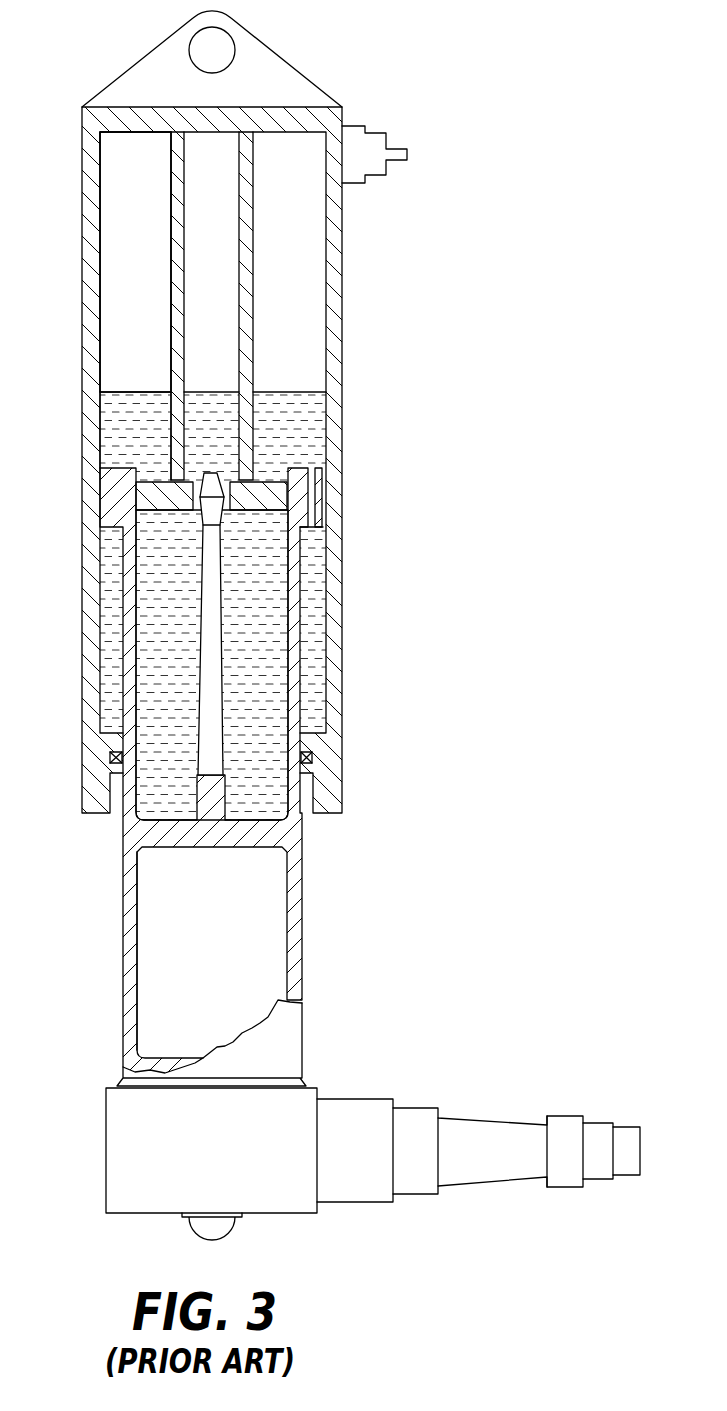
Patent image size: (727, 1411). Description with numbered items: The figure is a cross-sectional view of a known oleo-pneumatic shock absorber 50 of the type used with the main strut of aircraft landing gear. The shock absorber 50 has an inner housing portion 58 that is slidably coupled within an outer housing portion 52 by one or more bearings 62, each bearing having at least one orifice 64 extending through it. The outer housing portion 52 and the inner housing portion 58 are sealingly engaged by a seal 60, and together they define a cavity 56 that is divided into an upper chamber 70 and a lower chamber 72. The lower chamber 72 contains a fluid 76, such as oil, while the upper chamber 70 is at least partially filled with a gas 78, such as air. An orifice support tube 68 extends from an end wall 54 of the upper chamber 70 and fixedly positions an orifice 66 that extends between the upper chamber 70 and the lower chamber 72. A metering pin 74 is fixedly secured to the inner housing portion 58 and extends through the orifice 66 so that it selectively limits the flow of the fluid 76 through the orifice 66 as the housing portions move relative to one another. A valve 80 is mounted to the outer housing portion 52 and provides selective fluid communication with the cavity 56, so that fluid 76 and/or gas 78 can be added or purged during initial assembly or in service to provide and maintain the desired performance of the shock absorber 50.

The oleo-pneumatic shock absorber 50 is at (410, 52).
The outer housing portion 52 is at (342, 681).
The end wall 54 is at (276, 128).
The cavity 56 is at (137, 271).
The inner housing portion 58 is at (302, 908).
The seal 60 is at (312, 758).
The bearing 62 is at (305, 465).
The orifice 64 is at (318, 488).
The orifice 66 is at (197, 484).
The orifice support tube 68 is at (255, 271).
The upper chamber 70 is at (135, 334).
The lower chamber 72 is at (158, 678).
The metering pin 74 is at (222, 633).
The fluid 76 is at (165, 597).
The gas 78 is at (134, 160).
The valve 80 is at (388, 137).